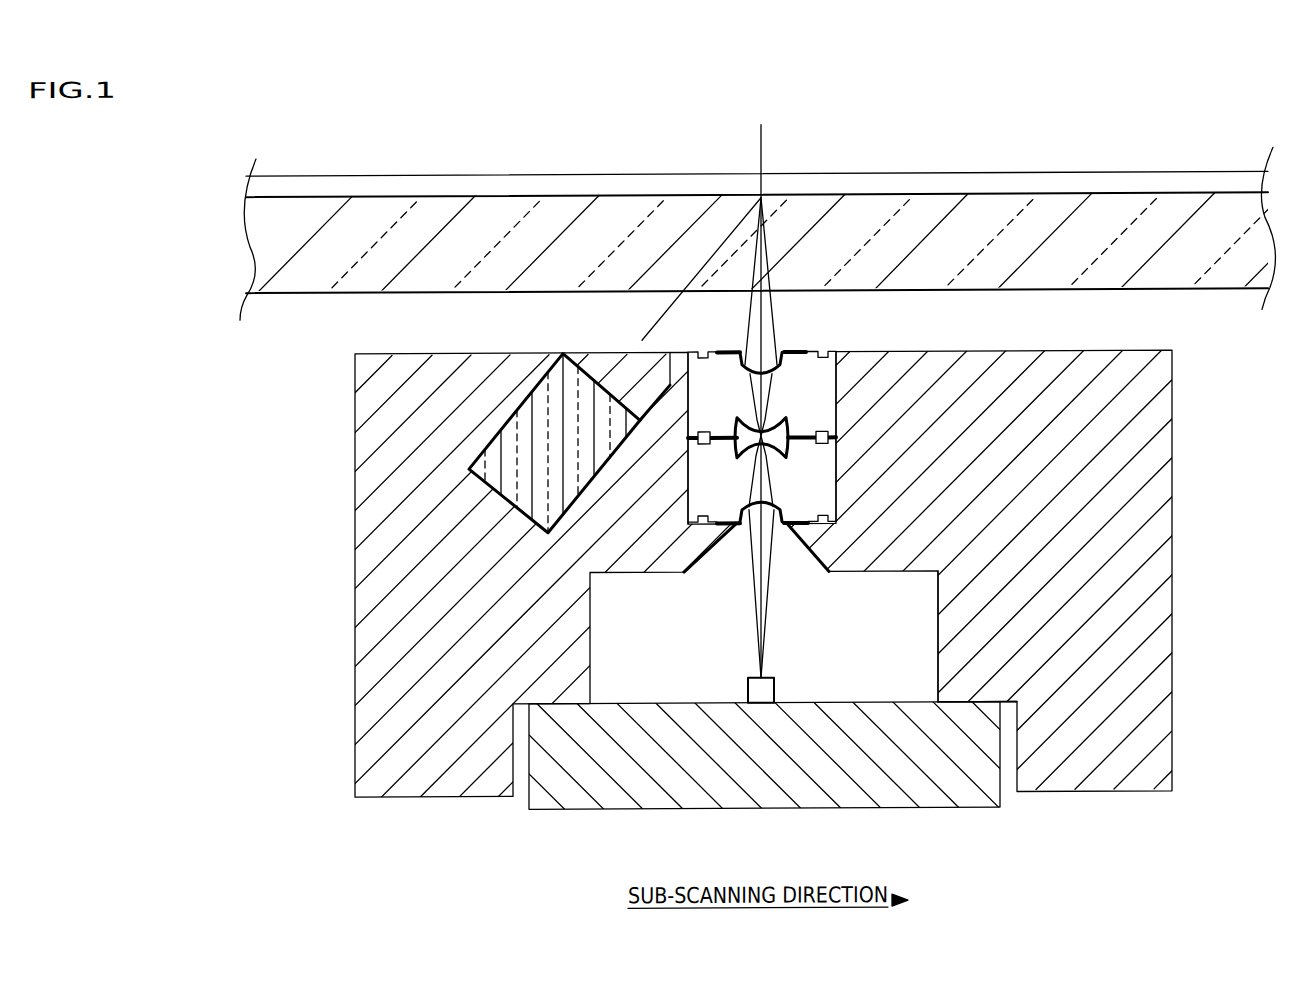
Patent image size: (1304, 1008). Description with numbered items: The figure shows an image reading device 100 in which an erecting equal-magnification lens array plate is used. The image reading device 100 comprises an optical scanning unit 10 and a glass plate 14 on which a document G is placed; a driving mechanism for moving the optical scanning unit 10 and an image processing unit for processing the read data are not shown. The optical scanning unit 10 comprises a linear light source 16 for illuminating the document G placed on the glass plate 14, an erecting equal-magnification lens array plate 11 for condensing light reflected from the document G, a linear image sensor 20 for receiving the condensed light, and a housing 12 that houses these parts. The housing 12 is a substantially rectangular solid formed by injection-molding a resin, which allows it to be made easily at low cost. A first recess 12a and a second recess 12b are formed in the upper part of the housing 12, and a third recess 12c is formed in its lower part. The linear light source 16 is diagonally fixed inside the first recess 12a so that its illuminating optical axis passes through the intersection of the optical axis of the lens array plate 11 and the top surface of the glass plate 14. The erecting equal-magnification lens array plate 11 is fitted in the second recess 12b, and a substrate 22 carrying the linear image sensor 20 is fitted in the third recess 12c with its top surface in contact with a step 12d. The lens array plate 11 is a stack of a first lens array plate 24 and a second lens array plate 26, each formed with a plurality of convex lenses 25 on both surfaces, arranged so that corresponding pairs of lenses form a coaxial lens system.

The image reading device 100 is at (1060, 126).
The document G is at (389, 176).
The glass plate 14 is at (463, 203).
The optical scanning unit 10 is at (1188, 569).
The housing 12 is at (372, 583).
The first recess 12a is at (653, 395).
The second recess 12b is at (699, 352).
The third recess 12c is at (938, 663).
The step 12d is at (952, 703).
The linear light source 16 is at (513, 410).
The erecting equal-magnification lens array plate 11 is at (803, 336).
The second lens array plate 26 is at (820, 397).
The first lens array plate 24 is at (820, 478).
The convex lenses 25 is at (755, 358).
The linear image sensor 20 is at (748, 692).
The substrate 22 is at (654, 810).